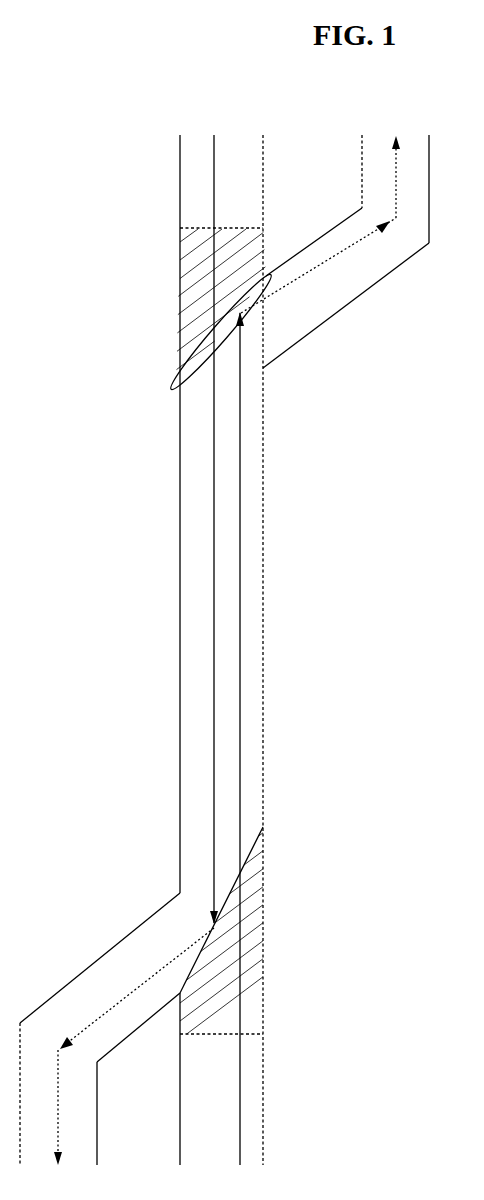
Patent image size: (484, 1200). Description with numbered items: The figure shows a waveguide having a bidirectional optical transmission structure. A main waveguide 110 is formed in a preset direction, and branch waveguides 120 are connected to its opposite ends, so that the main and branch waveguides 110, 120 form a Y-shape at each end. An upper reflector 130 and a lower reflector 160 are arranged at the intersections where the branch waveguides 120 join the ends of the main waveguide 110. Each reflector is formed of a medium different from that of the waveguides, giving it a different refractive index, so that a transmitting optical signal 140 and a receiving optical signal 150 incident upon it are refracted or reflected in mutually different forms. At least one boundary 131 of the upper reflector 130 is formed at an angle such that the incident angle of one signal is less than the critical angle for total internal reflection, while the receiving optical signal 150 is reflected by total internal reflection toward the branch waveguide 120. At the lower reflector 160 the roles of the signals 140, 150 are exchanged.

The main waveguide 110 is at (250, 527).
The branch waveguide 120 is at (355, 288).
The upper reflector 130 is at (193, 292).
The boundary 131 is at (172, 388).
The transmitting optical signal 140 is at (214, 462).
The receiving optical signal 150 is at (240, 412).
The lower reflector 160 is at (258, 955).